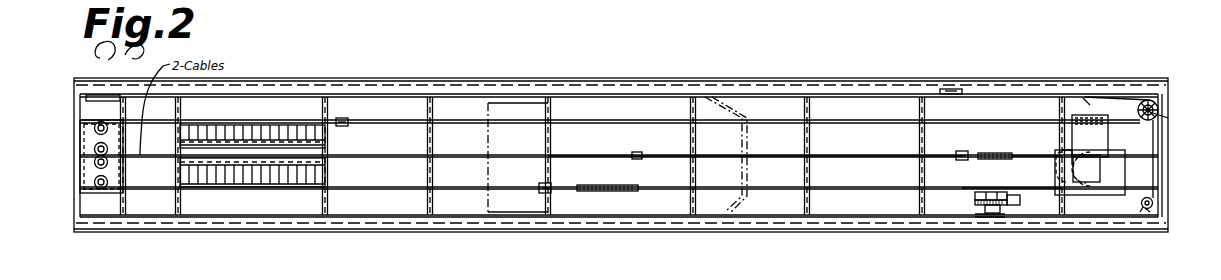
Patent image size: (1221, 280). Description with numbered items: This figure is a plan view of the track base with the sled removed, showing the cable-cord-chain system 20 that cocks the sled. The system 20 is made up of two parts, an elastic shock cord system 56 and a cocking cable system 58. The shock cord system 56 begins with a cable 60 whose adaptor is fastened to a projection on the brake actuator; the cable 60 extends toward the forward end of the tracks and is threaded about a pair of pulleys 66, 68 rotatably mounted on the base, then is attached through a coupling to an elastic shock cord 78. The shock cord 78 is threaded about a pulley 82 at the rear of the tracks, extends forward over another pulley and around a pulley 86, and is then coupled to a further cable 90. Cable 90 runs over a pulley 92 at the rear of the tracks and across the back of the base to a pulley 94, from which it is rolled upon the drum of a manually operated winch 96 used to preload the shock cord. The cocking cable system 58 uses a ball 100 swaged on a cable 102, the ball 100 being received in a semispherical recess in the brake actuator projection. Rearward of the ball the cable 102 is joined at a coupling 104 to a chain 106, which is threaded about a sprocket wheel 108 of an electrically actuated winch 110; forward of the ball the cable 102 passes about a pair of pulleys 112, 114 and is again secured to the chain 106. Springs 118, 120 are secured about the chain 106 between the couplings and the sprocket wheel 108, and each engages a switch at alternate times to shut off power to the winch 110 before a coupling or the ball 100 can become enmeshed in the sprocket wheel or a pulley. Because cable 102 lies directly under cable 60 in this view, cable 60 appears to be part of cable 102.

The cable-cord-chain system 20 is at (637, 152).
The elastic shock cord system 56 is at (491, 111).
The cocking cable system 58 is at (618, 198).
The cable 60 is at (492, 156).
The pulley 66 is at (95, 149).
The pulley 68 is at (95, 126).
The elastic shock cord 78 is at (385, 118).
The pulley 82 is at (1162, 112).
The pulley 86 is at (94, 96).
The cable 90 is at (1148, 165).
The pulley 92 is at (1156, 102).
The pulley 94 is at (1153, 205).
The hand operated winch 96 is at (1012, 208).
The ball 100 is at (637, 159).
The cable 102 is at (738, 152).
The coupling 104 is at (962, 151).
The chain 106 is at (1035, 155).
The sprocket wheel 108 is at (1060, 160).
The electrically actuated winch 110 is at (1125, 160).
The pulley 112 is at (95, 162).
The pulley 114 is at (95, 182).
The spring 118 is at (993, 153).
The spring 120 is at (578, 191).